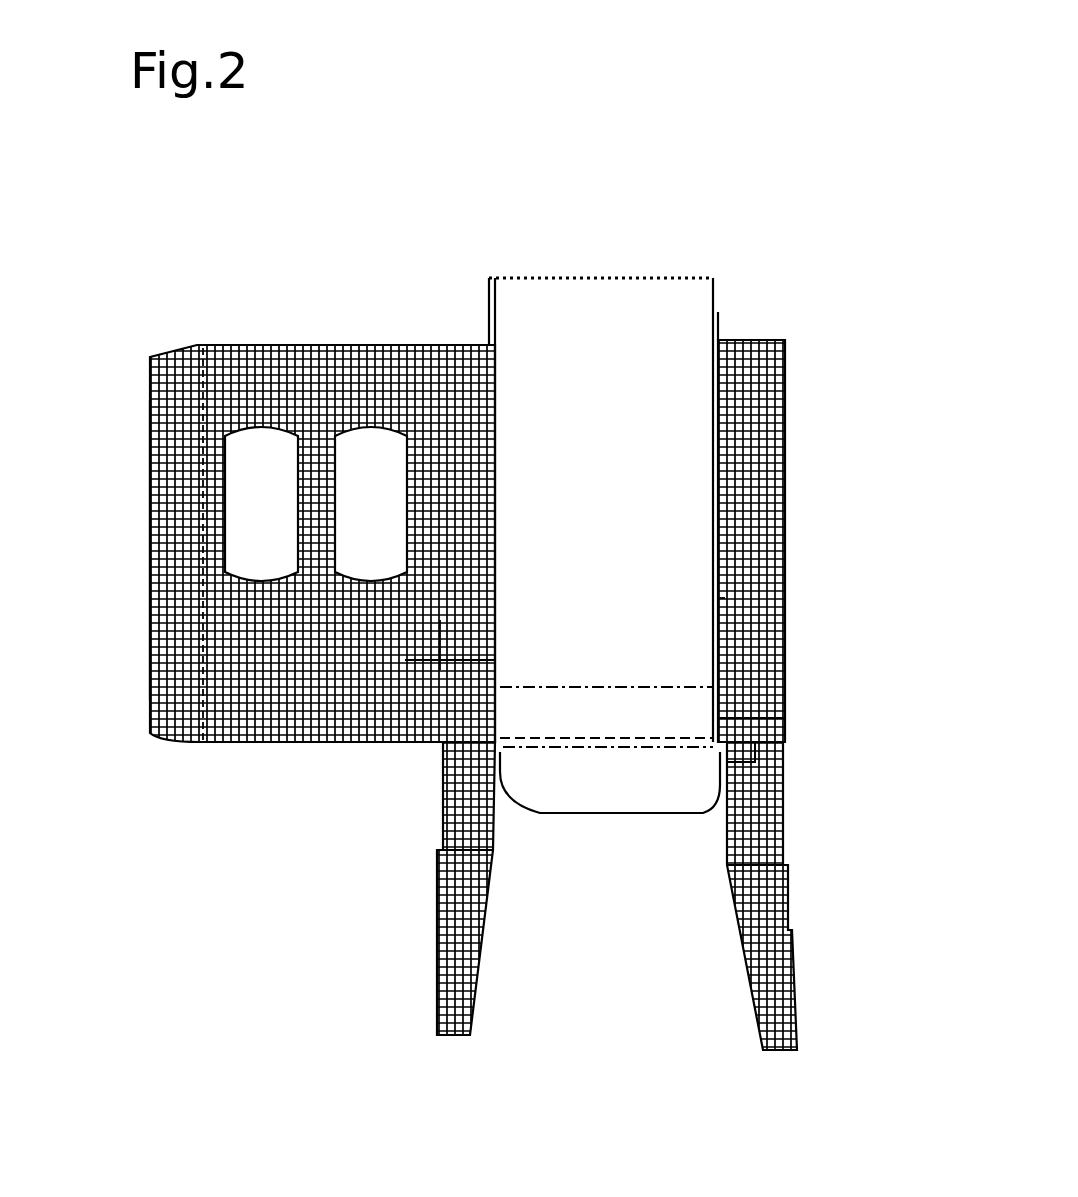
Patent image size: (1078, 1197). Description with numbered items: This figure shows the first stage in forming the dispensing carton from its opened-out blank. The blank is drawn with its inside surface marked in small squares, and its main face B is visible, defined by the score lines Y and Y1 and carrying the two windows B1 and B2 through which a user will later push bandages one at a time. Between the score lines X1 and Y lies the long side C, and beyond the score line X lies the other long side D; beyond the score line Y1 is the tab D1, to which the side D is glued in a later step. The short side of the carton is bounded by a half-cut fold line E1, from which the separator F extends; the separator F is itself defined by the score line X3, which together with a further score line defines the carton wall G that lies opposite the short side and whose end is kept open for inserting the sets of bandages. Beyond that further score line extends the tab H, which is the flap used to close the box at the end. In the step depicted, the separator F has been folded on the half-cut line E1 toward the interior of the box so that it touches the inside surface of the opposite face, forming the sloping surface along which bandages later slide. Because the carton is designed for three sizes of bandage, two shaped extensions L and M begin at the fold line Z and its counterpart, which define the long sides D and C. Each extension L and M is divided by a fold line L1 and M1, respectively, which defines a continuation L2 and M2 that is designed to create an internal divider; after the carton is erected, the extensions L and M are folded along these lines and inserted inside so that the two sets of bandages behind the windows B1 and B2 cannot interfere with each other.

The housing body B is at (322, 543).
The partition wall C is at (473, 510).
The side wall D is at (751, 541).
The first opening B1 is at (261, 504).
The second opening B2 is at (371, 504).
The insertion opening E1 is at (594, 276).
The contact chamber F is at (668, 495).
The lateral dimension X is at (725, 598).
The lateral dimension X1 is at (494, 677).
The reference plane X3 is at (570, 686).
The wall thickness Y is at (435, 643).
The wall thickness Y1 is at (200, 645).
The step region Z is at (757, 762).
The shoulder G is at (725, 718).
The bottom cavity H is at (625, 800).
The outer side wall D1 is at (180, 658).
The left leg M is at (445, 803).
The left leg middle section M1 is at (440, 898).
The left leg end section M2 is at (440, 972).
The right leg L is at (745, 838).
The right leg middle section L1 is at (745, 898).
The right leg end section L2 is at (775, 967).